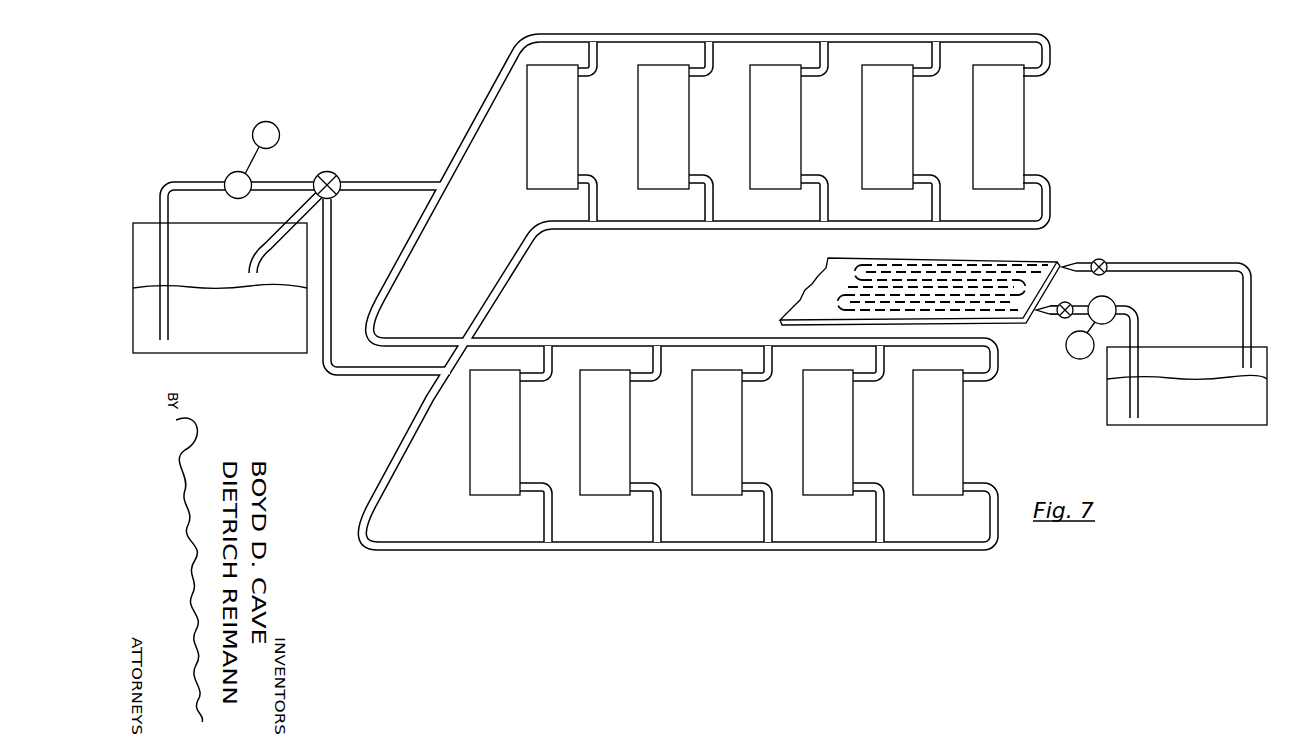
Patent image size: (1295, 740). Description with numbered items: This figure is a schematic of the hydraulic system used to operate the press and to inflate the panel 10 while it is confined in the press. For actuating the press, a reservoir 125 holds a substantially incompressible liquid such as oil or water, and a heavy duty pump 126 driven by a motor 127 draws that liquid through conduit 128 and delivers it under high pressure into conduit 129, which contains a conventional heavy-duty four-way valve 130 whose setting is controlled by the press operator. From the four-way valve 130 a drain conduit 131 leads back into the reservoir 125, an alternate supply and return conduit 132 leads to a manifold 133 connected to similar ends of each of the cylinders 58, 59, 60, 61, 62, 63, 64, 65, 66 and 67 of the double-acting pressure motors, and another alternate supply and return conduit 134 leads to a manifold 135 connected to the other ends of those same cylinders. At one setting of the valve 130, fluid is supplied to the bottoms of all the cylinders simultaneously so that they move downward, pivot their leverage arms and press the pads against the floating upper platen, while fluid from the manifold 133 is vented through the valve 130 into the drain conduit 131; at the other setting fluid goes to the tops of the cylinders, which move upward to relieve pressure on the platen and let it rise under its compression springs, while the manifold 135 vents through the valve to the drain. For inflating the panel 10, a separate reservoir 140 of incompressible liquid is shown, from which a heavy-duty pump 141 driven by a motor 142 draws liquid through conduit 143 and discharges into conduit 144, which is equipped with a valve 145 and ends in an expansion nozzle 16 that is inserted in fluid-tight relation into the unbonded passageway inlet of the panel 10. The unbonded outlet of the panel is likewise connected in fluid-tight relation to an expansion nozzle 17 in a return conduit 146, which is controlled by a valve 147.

The panel 10 is at (815, 288).
The expansion nozzle 16 is at (1047, 318).
The expansion nozzle 17 is at (1080, 262).
The cylinder 58 is at (518, 420).
The cylinder 59 is at (576, 103).
The cylinder 60 is at (628, 427).
The cylinder 61 is at (687, 103).
The cylinder 62 is at (740, 425).
The cylinder 63 is at (799, 103).
The cylinder 64 is at (851, 423).
The cylinder 65 is at (911, 103).
The cylinder 66 is at (961, 425).
The cylinder 67 is at (1022, 100).
The reservoir 125 is at (277, 353).
The heavy duty pump 126 is at (232, 174).
The motor 127 is at (272, 120).
The conduit 128 is at (151, 182).
The conduit 129 is at (279, 182).
The four-way valve 130 is at (325, 172).
The drain conduit 131 is at (268, 242).
The alternate supply and return conduit 132 is at (375, 182).
The manifold 133 is at (760, 37).
The alternate supply and return conduit 134 is at (332, 272).
The manifold 135 is at (745, 228).
The reservoir 140 is at (1187, 425).
The heavy-duty pump 141 is at (1113, 300).
The motor 142 is at (1076, 360).
The conduit 143 is at (1138, 331).
The conduit 144 is at (1075, 303).
The valve 145 is at (1060, 318).
The return conduit 146 is at (1192, 262).
The valve 147 is at (1101, 258).